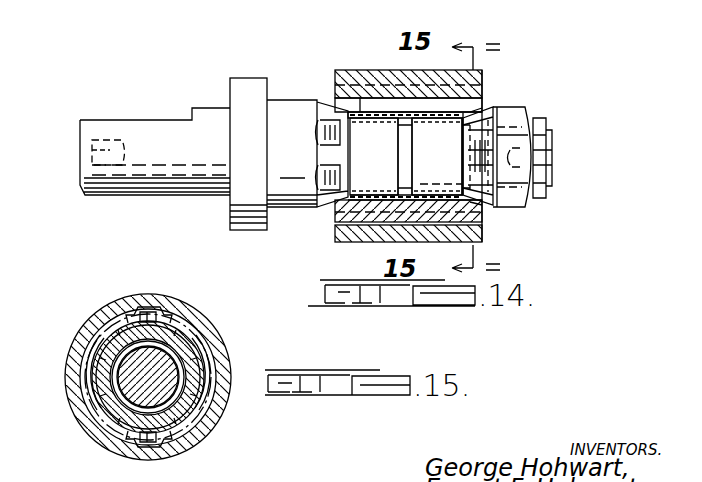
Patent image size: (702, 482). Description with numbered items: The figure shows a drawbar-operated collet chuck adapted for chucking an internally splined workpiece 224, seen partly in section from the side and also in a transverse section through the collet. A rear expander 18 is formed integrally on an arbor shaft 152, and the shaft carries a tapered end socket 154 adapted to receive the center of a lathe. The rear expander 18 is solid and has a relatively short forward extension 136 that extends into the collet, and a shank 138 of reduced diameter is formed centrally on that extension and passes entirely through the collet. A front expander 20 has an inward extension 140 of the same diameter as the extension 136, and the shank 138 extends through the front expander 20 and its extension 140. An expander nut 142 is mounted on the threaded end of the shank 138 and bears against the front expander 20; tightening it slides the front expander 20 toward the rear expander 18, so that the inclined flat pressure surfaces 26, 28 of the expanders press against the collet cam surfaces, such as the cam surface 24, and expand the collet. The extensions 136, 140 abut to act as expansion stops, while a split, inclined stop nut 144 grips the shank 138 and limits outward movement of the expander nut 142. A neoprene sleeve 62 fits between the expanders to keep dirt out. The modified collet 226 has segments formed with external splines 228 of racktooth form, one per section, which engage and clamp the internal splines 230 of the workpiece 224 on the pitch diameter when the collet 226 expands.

In FIG. 14, the arbor shaft 152 is at (130, 122).
In FIG. 14, the tapered end socket 154 is at (92, 160).
In FIG. 14, the rear expander 18 is at (294, 101).
In FIG. 14, the external pressure surface 26 is at (322, 138).
In FIG. 14, the sleeve 62 is at (342, 218).
In FIG. 14, the modified collet 226 is at (345, 103).
In FIG. 15, the modified collet 226 is at (197, 357).
In FIG. 14, the shank 138 is at (406, 137).
In FIG. 15, the shank 138 is at (160, 383).
In FIG. 14, the forward extension 136 is at (392, 163).
In FIG. 14, the inward extension 140 is at (458, 146).
In FIG. 15, the inward extension 140 is at (176, 392).
In FIG. 14, the external pressure surface 28 is at (470, 155).
In FIG. 14, the internally splined workpiece 224 is at (470, 110).
In FIG. 15, the internally splined workpiece 224 is at (185, 430).
In FIG. 14, the front expander 20 is at (478, 113).
In FIG. 14, the expander nut 142 is at (518, 112).
In FIG. 14, the stop nut 144 is at (540, 130).
In FIG. 15, the internal splines 230 is at (143, 310).
In FIG. 15, the external splines 228 is at (170, 325).
In FIG. 15, the internal cam surface 24 is at (105, 393).